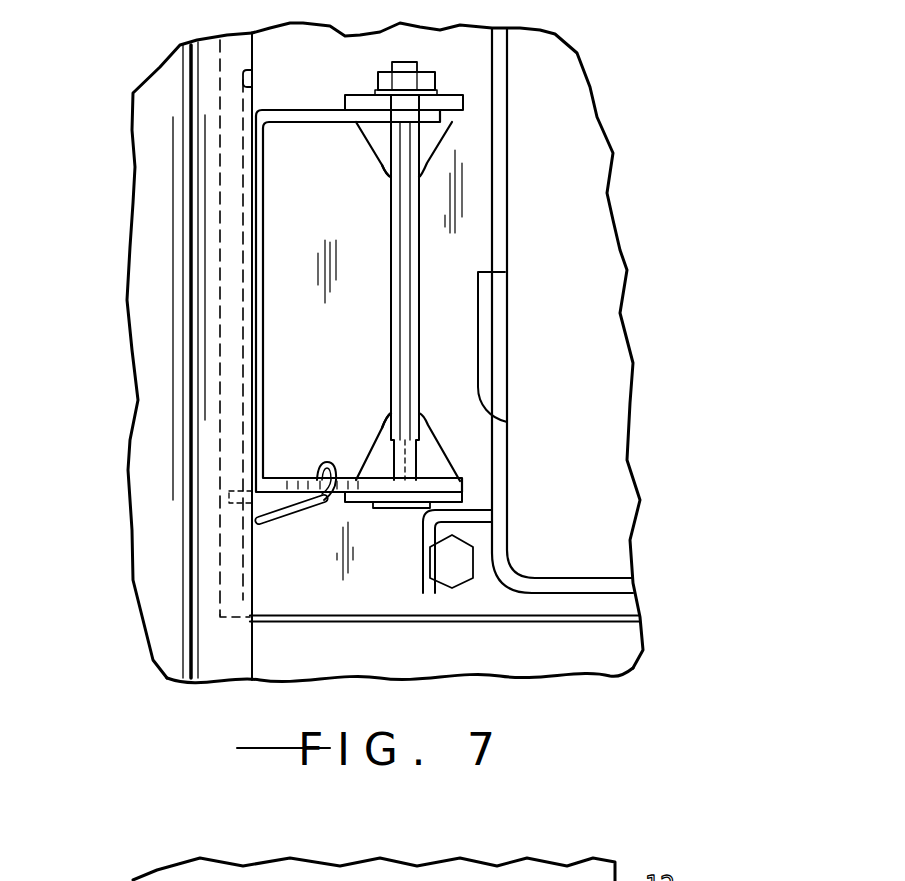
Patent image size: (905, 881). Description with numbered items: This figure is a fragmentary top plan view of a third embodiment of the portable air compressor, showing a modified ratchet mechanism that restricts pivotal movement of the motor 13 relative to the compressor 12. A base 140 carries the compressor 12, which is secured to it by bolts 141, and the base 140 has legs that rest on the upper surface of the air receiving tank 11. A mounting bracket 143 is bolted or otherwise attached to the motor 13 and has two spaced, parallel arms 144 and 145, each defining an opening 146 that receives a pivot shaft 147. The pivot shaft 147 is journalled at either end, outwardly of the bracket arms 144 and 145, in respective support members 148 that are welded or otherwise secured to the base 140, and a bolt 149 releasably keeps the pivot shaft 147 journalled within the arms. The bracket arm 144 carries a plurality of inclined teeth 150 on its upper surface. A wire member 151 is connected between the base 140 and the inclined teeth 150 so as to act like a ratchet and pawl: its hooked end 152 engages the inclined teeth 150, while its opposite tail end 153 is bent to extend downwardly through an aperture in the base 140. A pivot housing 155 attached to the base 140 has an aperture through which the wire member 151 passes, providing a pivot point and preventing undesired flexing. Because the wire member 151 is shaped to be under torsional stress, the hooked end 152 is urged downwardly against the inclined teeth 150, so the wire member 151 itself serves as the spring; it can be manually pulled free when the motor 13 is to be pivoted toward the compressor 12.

The air receiving tank 11 is at (568, 652).
The compressor 12 is at (588, 323).
The motor 13 is at (143, 530).
The base 140 is at (330, 600).
The bolts 141 is at (447, 560).
The mounting bracket 143 is at (278, 309).
The bracket arm 144 is at (445, 470).
The bracket arm 145 is at (322, 124).
The opening 146 is at (385, 137).
The pivot shaft 147 is at (420, 263).
The support members 148 is at (382, 170).
The bolt 149 is at (437, 77).
The inclined teeth 150 is at (338, 500).
The wire member 151 is at (243, 268).
The hooked end 152 is at (317, 467).
The tail end 153 is at (256, 74).
The pivot housing 155 is at (287, 513).